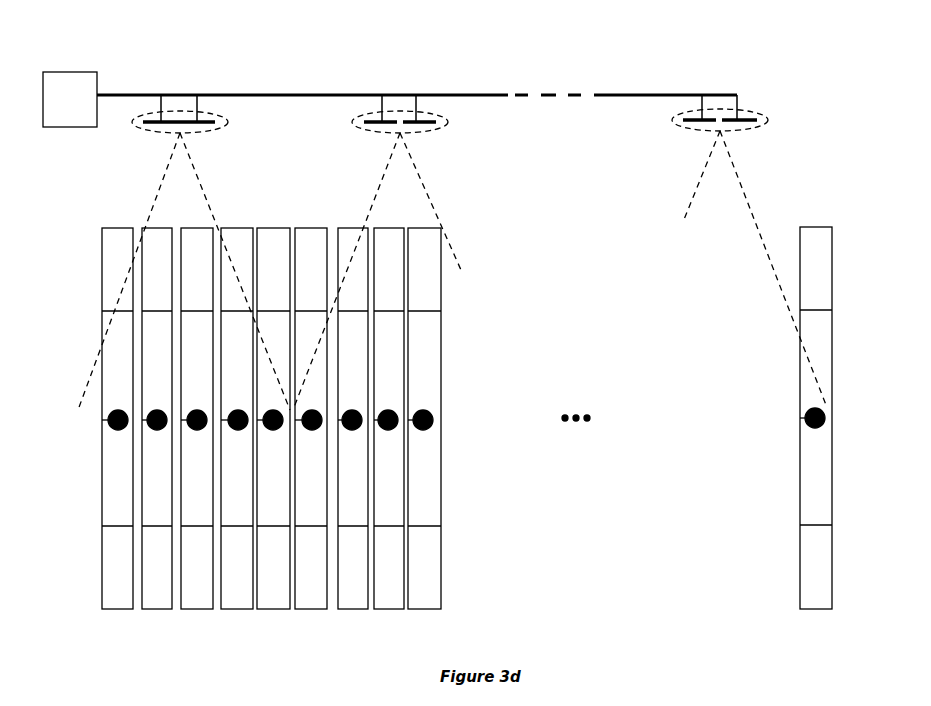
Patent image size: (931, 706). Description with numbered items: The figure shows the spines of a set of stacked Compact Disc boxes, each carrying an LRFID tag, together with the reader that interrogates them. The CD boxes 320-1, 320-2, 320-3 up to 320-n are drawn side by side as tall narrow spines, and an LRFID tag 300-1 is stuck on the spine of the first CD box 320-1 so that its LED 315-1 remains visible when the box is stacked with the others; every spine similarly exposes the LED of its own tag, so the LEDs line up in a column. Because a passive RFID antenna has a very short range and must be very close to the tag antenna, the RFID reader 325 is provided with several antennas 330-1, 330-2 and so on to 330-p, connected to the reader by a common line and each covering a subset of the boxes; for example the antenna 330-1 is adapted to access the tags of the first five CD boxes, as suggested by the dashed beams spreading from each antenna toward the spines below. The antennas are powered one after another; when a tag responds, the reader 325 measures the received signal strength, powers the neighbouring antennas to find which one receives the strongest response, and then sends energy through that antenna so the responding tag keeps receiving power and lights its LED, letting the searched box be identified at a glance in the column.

The RFID reader 325 is at (73, 72).
The antenna 330-1 is at (206, 135).
The antenna 330-2 is at (425, 135).
The antenna 330-p is at (746, 133).
The LRFID tag 300-1 is at (442, 444).
The LED 315-1 is at (120, 431).
The CD box 320-1 is at (114, 611).
The CD box 320-2 is at (157, 611).
The CD box 320-3 is at (200, 611).
The CD box 320-n is at (820, 611).